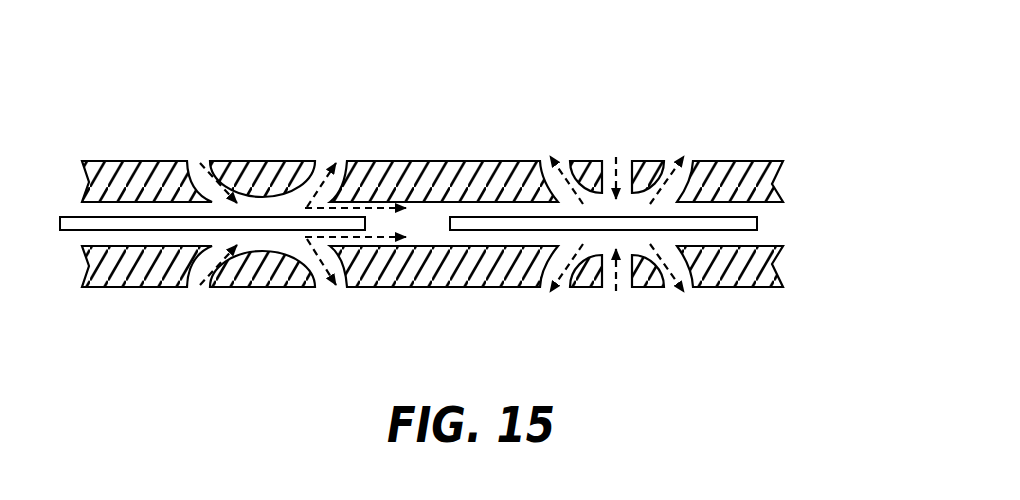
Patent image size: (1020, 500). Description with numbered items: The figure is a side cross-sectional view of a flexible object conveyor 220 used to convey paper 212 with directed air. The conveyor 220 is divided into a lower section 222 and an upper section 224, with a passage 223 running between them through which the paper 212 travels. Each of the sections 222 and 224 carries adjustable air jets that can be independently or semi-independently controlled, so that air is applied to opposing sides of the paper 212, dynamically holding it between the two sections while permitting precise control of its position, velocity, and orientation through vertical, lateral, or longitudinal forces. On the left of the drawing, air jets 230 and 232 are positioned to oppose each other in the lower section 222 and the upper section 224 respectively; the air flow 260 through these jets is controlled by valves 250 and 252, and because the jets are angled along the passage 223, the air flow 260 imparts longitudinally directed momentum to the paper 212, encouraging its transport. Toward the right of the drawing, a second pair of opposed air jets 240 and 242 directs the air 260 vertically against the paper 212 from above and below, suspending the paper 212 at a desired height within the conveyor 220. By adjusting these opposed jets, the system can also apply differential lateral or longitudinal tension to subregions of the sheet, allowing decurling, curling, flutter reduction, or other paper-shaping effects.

The flexible object conveyor 220 is at (164, 80).
The upper section 224 is at (783, 186).
The lower section 222 is at (783, 277).
The air jet 232 is at (267, 134).
The air jet 230 is at (277, 309).
The opposed air jet 240 is at (621, 134).
The opposed air jet 242 is at (619, 309).
The paper 212 is at (492, 224).
The passage 223 is at (799, 223).
The valve 250 is at (204, 223).
The valve 252 is at (336, 223).
The air flow 260 is at (317, 184).